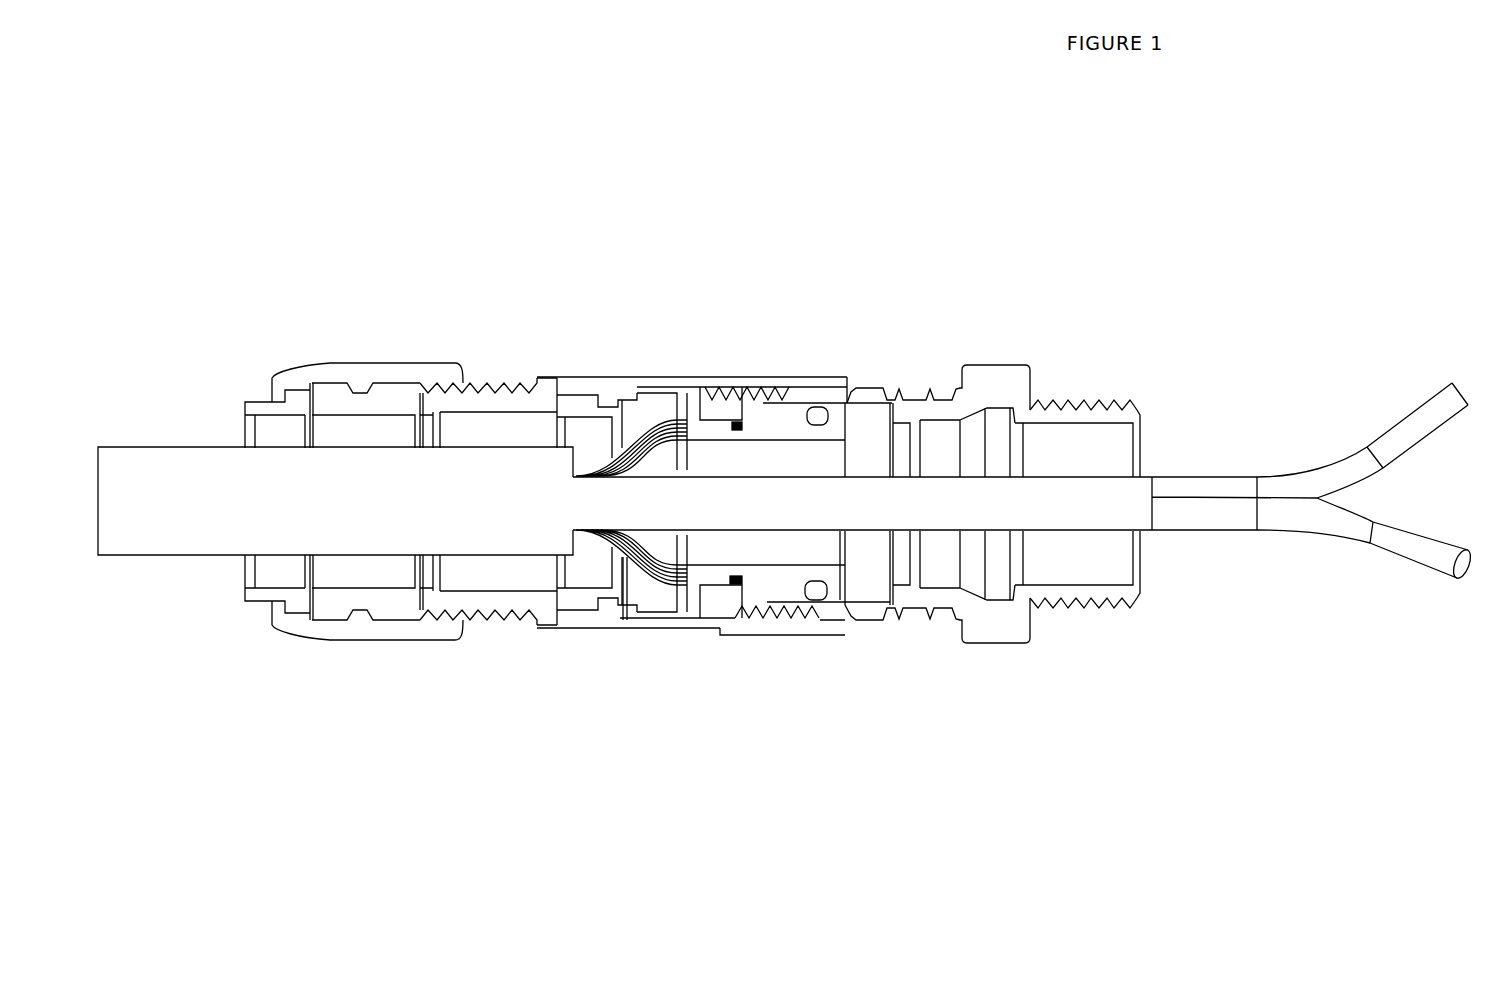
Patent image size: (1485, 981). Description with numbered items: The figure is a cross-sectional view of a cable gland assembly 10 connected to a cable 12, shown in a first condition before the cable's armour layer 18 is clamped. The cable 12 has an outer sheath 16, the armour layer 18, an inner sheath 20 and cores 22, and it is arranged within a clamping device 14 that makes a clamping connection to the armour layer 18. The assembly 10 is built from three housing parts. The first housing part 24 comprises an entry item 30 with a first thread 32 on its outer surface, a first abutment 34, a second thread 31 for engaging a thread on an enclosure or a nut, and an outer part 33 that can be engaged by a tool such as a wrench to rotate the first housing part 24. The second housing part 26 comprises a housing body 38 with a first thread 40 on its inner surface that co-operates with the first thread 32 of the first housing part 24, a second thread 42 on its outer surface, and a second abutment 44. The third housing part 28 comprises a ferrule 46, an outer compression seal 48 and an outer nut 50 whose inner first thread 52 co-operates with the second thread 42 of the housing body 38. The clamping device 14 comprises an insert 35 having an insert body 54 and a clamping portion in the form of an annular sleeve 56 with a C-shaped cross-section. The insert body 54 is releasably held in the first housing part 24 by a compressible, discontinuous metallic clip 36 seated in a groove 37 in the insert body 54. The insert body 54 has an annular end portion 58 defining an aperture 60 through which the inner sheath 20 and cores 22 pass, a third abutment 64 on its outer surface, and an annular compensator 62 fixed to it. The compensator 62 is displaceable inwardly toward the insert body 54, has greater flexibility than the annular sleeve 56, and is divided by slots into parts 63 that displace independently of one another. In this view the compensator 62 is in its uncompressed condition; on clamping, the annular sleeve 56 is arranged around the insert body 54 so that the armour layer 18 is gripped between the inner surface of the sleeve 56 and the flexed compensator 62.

The cable gland assembly 10 is at (211, 135).
The cable 12 is at (185, 588).
The clamping device 14 is at (660, 142).
The outer sheath 16 is at (130, 455).
The armour layer 18 is at (634, 630).
The inner sheath 20 is at (1090, 513).
The cores 22 is at (1244, 477).
The first housing part 24 is at (945, 287).
The second housing part 26 is at (630, 268).
The third housing part 28 is at (360, 258).
The entry item 30 is at (995, 365).
The second thread 31 is at (1088, 402).
The first thread 32 is at (867, 620).
The outer part 33 is at (1003, 648).
The first abutment 34 is at (847, 380).
The insert 35 is at (717, 417).
The metallic clip 36 is at (817, 600).
The groove 37 is at (838, 593).
The housing body 38 is at (537, 385).
The first thread 40 is at (658, 378).
The second thread 42 is at (497, 620).
The second abutment 44 is at (553, 627).
The ferrule 46 is at (255, 395).
The outer compression seal 48 is at (388, 405).
The outer nut 50 is at (328, 388).
The first thread 52 is at (437, 623).
The insert body 54 is at (787, 422).
The annular sleeve 56 is at (588, 410).
The annular end portion 58 is at (725, 563).
The aperture 60 is at (758, 565).
The compensator 62 is at (688, 623).
The parts 63 is at (713, 633).
The third abutment 64 is at (745, 417).